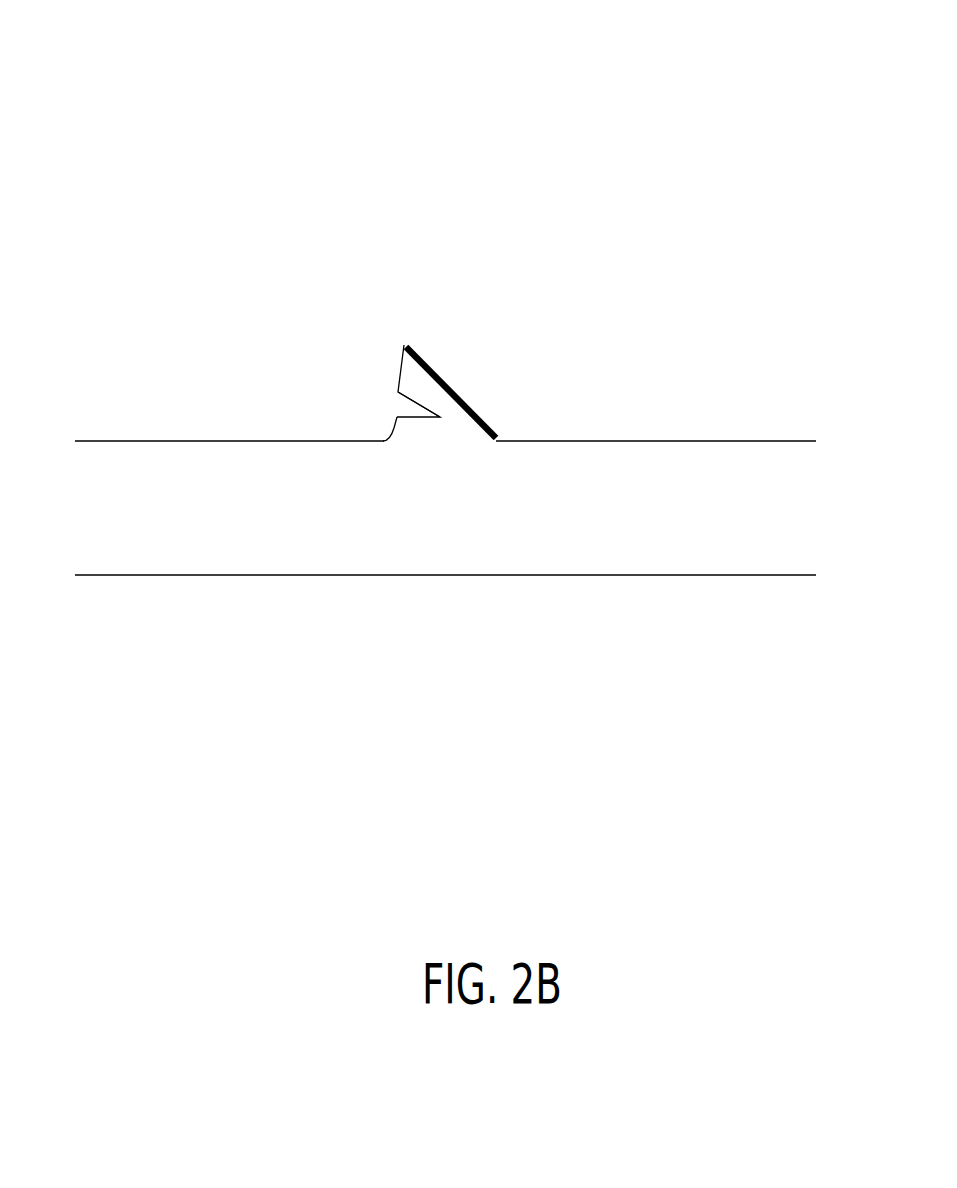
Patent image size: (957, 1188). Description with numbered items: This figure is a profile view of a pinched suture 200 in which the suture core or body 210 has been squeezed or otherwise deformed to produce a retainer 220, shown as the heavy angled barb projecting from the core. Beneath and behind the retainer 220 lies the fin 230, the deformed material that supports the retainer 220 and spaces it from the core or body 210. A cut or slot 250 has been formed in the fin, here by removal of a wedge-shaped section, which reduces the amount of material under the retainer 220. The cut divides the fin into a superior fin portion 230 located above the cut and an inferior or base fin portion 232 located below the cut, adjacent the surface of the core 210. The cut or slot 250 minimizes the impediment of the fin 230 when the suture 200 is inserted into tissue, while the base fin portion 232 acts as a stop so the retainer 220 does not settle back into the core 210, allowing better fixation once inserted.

The suture 200 is at (437, 165).
The suture core or body 210 is at (670, 478).
The retainer 220 is at (455, 372).
The fin 230 is at (388, 360).
The inferior or base fin portion 232 is at (383, 427).
The cut or slot 250 is at (405, 407).